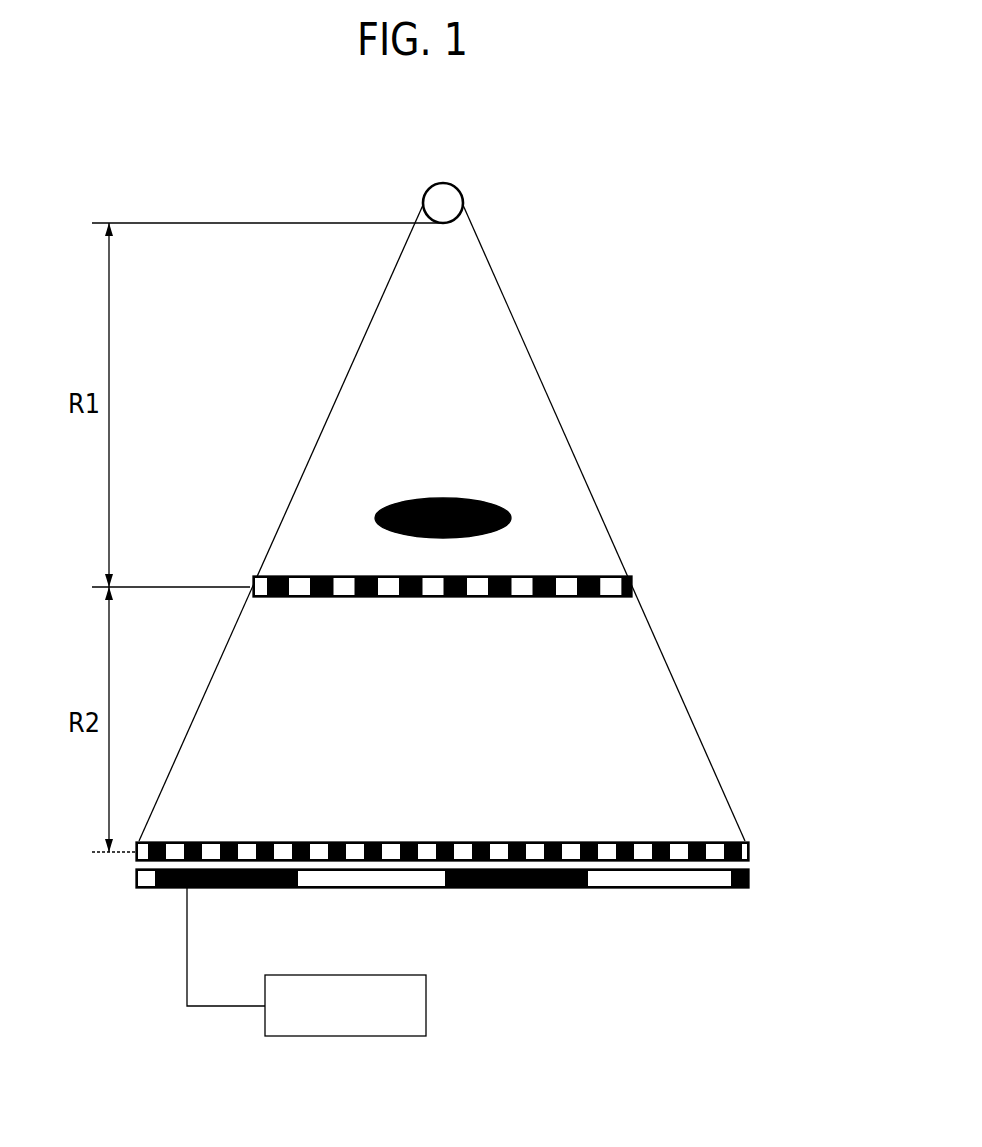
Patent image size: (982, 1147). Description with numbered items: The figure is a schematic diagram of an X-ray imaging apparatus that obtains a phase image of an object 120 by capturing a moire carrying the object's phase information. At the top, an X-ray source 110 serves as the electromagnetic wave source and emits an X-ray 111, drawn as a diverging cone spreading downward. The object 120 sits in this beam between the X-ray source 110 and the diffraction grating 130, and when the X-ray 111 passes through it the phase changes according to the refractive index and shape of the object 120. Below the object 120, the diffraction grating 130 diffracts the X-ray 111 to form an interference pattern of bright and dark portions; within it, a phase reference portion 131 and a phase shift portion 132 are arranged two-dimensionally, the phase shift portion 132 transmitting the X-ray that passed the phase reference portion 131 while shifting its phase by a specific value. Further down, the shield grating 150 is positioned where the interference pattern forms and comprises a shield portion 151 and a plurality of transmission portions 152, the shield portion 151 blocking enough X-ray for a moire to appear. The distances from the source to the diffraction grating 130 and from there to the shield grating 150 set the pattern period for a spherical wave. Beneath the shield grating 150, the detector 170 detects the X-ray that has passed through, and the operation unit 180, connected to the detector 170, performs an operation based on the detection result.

The X-ray source 110 is at (458, 190).
The X-ray 111 is at (508, 300).
The object 120 is at (447, 504).
The diffraction grating 130 is at (587, 590).
The phase reference portion 131 is at (630, 585).
The phase shift portion 132 is at (607, 582).
The shield grating 150 is at (751, 851).
The shield portion 151 is at (734, 846).
The transmission portions 152 is at (714, 846).
The detector 170 is at (722, 888).
The operation unit 180 is at (426, 1006).